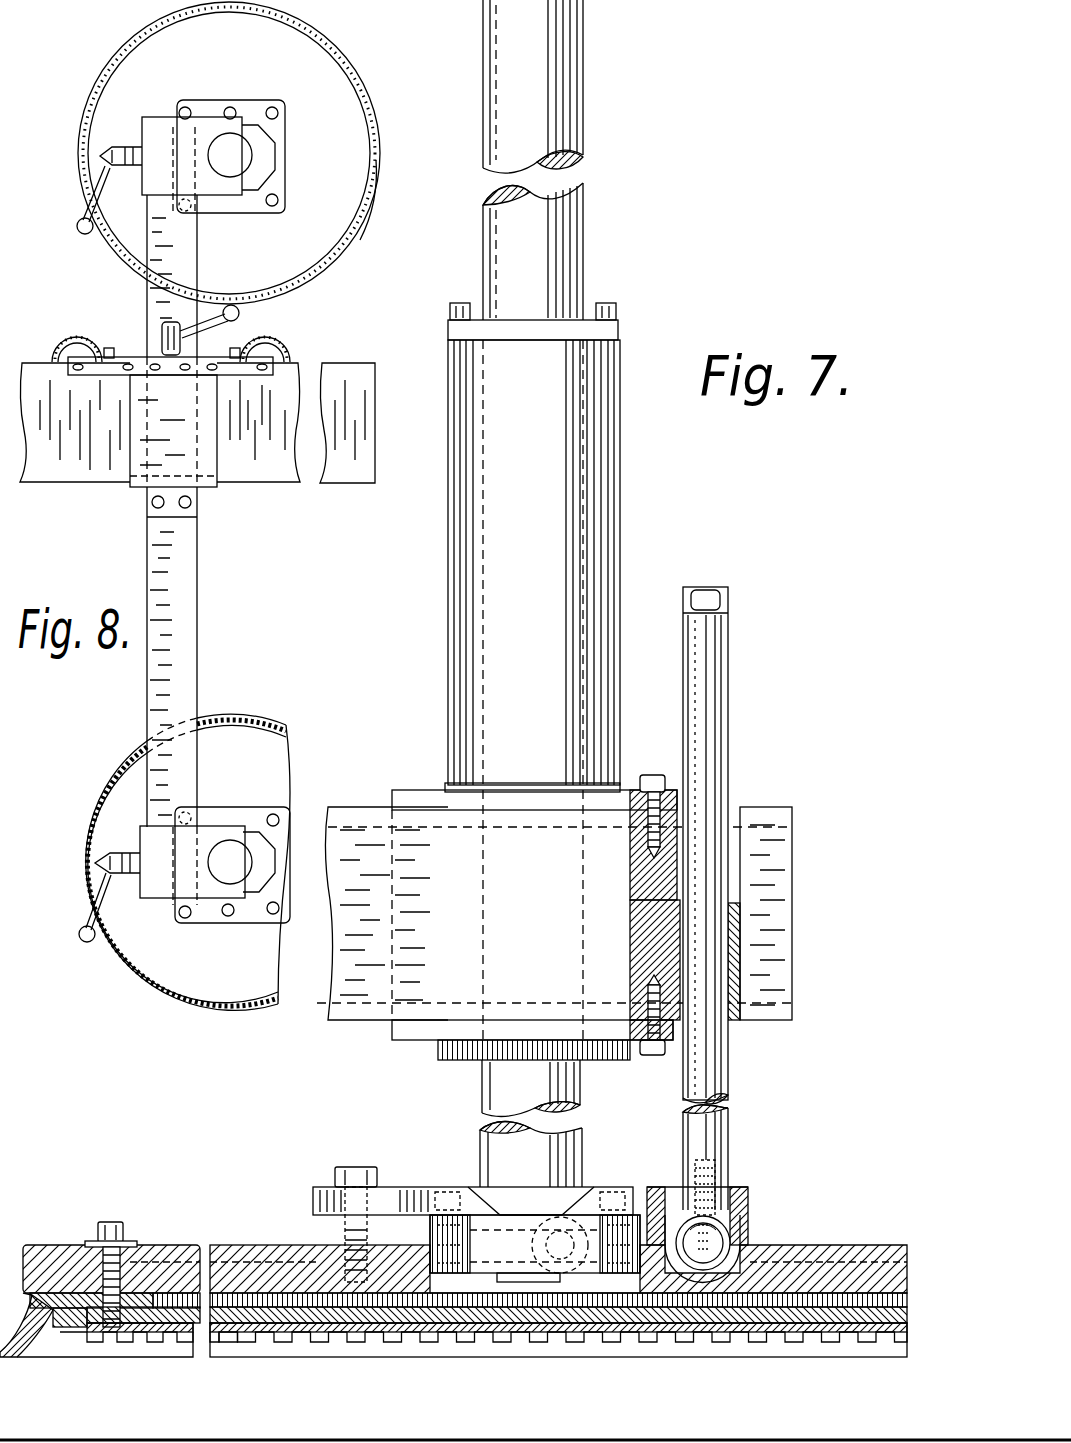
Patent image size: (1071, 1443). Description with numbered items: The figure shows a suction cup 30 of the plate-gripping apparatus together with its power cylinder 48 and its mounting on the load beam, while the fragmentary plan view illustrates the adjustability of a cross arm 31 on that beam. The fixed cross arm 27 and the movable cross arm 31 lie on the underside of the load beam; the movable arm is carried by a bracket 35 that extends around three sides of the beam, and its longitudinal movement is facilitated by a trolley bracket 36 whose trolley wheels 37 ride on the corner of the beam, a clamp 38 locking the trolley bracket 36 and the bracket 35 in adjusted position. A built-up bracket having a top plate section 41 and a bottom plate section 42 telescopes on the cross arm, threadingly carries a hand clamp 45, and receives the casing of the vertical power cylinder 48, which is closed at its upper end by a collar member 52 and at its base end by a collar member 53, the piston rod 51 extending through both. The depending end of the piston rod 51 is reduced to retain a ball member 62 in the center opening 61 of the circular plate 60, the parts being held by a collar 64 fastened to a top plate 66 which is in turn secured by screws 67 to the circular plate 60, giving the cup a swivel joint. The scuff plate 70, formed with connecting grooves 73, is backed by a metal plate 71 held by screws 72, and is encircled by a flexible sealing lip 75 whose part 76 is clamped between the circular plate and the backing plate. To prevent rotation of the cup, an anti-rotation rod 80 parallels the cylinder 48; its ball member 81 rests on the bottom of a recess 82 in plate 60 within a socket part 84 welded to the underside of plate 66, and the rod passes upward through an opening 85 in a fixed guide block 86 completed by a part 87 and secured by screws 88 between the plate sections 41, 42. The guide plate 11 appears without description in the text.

In FIG. 8, the suction cup 30 is at (108, 66).
In FIG. 8, the top plate section 41 is at (240, 130).
In FIG. 7, the top plate section 41 is at (430, 795).
In FIG. 8, the top plate 66 is at (290, 136).
In FIG. 7, the top plate 66 is at (415, 1200).
In FIG. 8, the hand clamp 45 is at (80, 222).
In FIG. 8, the flexible sealing lip 75 is at (379, 204).
In FIG. 7, the flexible sealing lip 75 is at (12, 1310).
In FIG. 8, the power cylinder 48 is at (240, 185).
In FIG. 7, the power cylinder 48 is at (480, 702).
In FIG. 8, the trolley bracket 36 is at (136, 349).
In FIG. 8, the clamp 38 is at (238, 314).
In FIG. 8, the trolley wheels 37 is at (82, 382).
In FIG. 8, the bracket 35 is at (178, 447).
In FIG. 8, the guide plate 11 is at (350, 440).
In FIG. 8, the cross arm 31 is at (184, 594).
In FIG. 7, the piston rod 51 is at (565, 232).
In FIG. 7, the collar member 52 is at (555, 325).
In FIG. 7, the anti-rotation rod 80 is at (715, 708).
In FIG. 7, the screws 88 is at (648, 782).
In FIG. 7, the part 87 is at (640, 880).
In FIG. 7, the cross arm 27 is at (780, 870).
In FIG. 7, the fixed guide block 86 is at (660, 940).
In FIG. 7, the opening 85 is at (718, 975).
In FIG. 7, the bottom plate section 42 is at (415, 1025).
In FIG. 7, the collar member 53 is at (534, 1005).
In FIG. 7, the screws 67 is at (350, 1180).
In FIG. 7, the ball member 81 is at (748, 1195).
In FIG. 7, the socket part 84 is at (674, 1232).
In FIG. 7, the circular plate 60 is at (248, 1250).
In FIG. 7, the part 76 is at (72, 1295).
In FIG. 7, the screws 72 is at (122, 1225).
In FIG. 7, the metal plate 71 is at (790, 1310).
In FIG. 7, the scuff plate 70 is at (835, 1335).
In FIG. 7, the connecting grooves 73 is at (235, 1332).
In FIG. 7, the collar 64 is at (475, 1262).
In FIG. 7, the ball member 62 is at (560, 1272).
In FIG. 7, the center opening 61 is at (650, 1272).
In FIG. 7, the recess 82 is at (730, 1272).